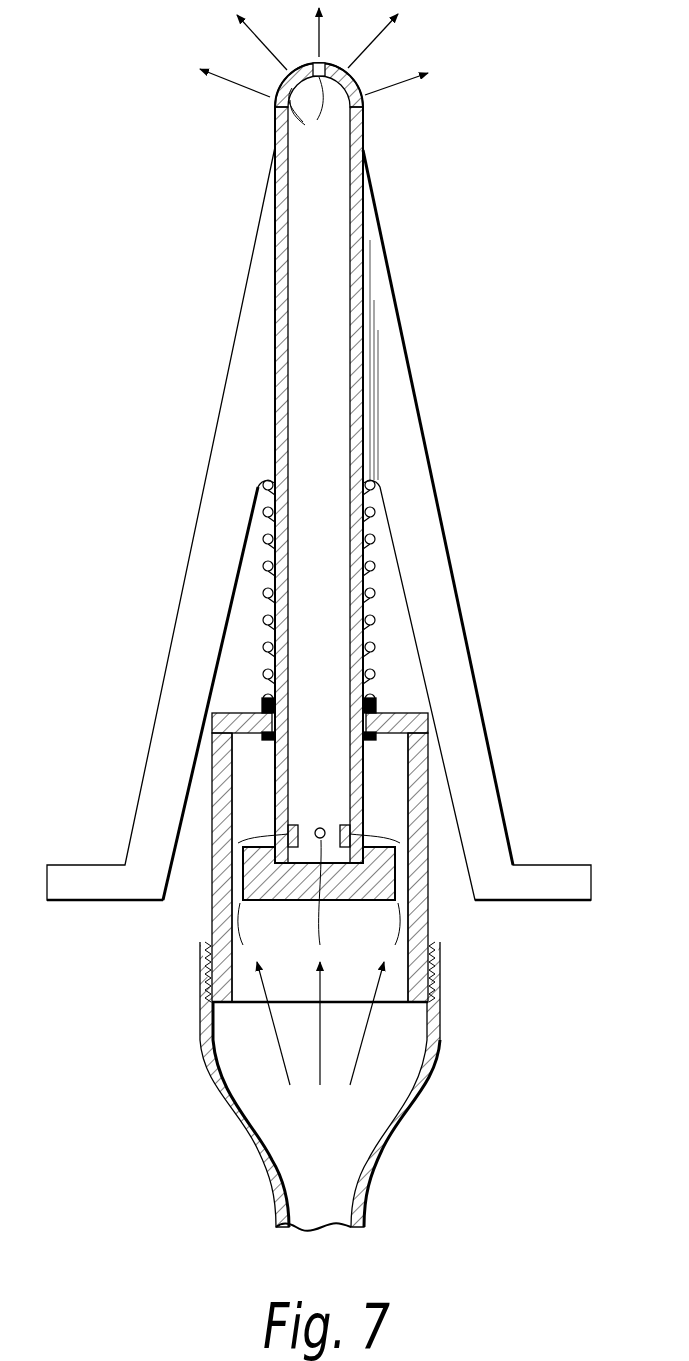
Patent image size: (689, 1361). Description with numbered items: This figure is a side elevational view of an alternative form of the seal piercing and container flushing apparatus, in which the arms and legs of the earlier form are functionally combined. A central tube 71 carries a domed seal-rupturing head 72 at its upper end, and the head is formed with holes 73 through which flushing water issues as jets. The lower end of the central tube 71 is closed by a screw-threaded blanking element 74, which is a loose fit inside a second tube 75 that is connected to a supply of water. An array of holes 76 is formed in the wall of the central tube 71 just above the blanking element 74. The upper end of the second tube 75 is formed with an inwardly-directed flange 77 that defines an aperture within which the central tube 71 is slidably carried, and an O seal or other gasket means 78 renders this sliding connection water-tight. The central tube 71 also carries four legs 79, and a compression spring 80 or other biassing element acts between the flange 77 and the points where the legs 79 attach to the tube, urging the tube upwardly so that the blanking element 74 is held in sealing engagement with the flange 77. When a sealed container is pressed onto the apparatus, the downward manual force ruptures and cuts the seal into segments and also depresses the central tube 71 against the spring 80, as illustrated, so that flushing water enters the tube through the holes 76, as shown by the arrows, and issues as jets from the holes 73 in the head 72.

The central tube 71 is at (313, 267).
The domed seal-rupturing head 72 is at (358, 78).
The holes 73 is at (312, 118).
The screw-threaded blanking element 74 is at (342, 883).
The second tube 75 is at (428, 905).
The array of holes 76 is at (290, 830).
The inwardly-directed flange 77 is at (398, 722).
The O seal 78 is at (262, 712).
The legs 79 is at (242, 437).
The compression spring 80 is at (378, 563).